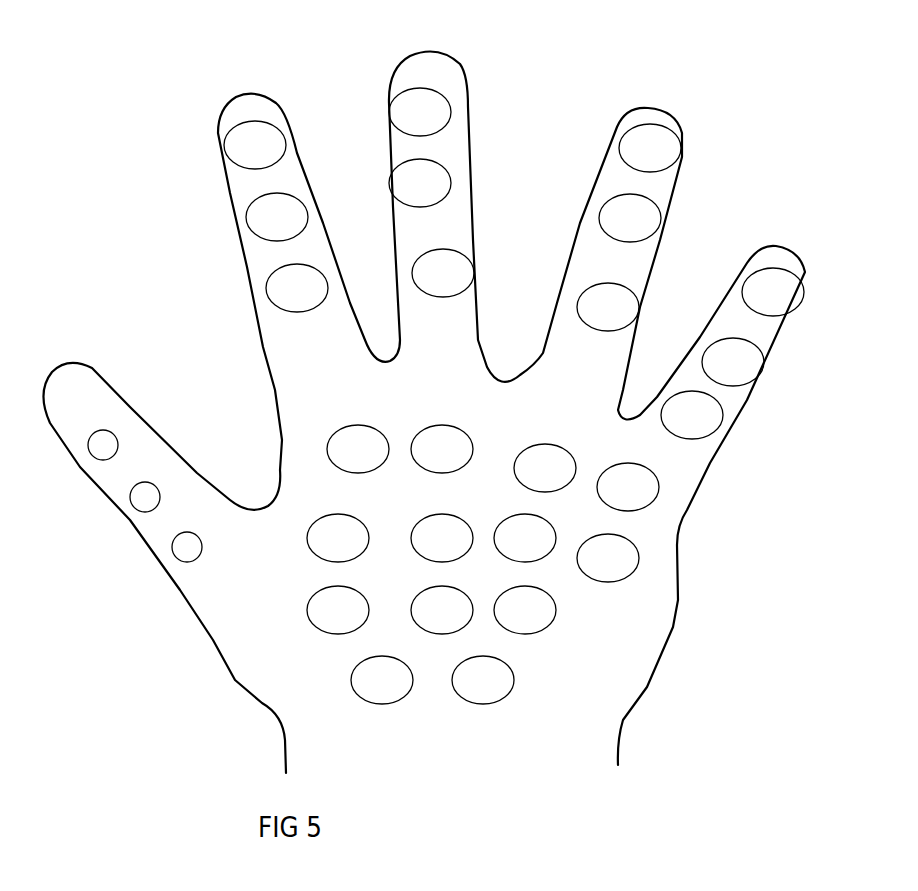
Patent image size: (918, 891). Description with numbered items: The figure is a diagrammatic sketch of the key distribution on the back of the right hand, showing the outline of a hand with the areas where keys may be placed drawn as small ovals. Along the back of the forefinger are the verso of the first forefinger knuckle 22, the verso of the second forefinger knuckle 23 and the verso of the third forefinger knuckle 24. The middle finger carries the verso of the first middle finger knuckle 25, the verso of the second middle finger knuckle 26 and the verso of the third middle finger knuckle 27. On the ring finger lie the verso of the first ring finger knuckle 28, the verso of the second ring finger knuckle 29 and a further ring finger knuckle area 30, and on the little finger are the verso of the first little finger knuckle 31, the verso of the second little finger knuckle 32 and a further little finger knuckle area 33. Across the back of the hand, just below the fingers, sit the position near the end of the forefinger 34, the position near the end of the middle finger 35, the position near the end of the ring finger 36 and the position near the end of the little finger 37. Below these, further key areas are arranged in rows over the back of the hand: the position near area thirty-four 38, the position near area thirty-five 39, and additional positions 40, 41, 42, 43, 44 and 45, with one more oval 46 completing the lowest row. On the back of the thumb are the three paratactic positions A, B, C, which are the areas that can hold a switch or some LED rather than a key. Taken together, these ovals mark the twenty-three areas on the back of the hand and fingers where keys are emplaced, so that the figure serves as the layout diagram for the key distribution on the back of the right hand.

The verso of the first forefinger knuckle 22 is at (255, 145).
The verso of the second forefinger knuckle 23 is at (277, 217).
The verso of the third forefinger knuckle 24 is at (297, 288).
The verso of the first middle finger knuckle 25 is at (420, 112).
The verso of the second middle finger knuckle 26 is at (420, 183).
The verso of the third middle finger knuckle 27 is at (443, 273).
The verso of the first ring finger knuckle 28 is at (650, 148).
The verso of the second ring finger knuckle 29 is at (630, 218).
The verso of the ring finger knuckle 30 is at (608, 307).
The verso of the first little finger knuckle 31 is at (773, 292).
The verso of the second little finger knuckle 32 is at (733, 362).
The verso of the little finger knuckle 33 is at (692, 415).
The position near the end of the forefinger at the back of hand 34 is at (358, 449).
The position near the end of the middle finger at the back of hand 35 is at (442, 449).
The position near the end of the ring finger at the back of hand 36 is at (545, 468).
The position near the end of the little finger at the back of hand 37 is at (628, 487).
The position near 34 at the back of hand 38 is at (338, 538).
The position near 35 at the back of hand 39 is at (442, 538).
The position near 34 at the back of hand 40 is at (525, 538).
The position near 34 at the back of hand 41 is at (608, 558).
The position near 34 at the back of hand 42 is at (338, 610).
The position near 34 at the back of hand 43 is at (442, 610).
The position near 34 at the back of hand 44 is at (525, 610).
The position near 34 at the back of hand 45 is at (382, 680).
The hand zone 46 is at (483, 680).
The paratactic position at the back of the thumb A is at (103, 445).
The paratactic position at the back of the thumb B is at (145, 497).
The paratactic position at the back of the thumb C is at (187, 547).